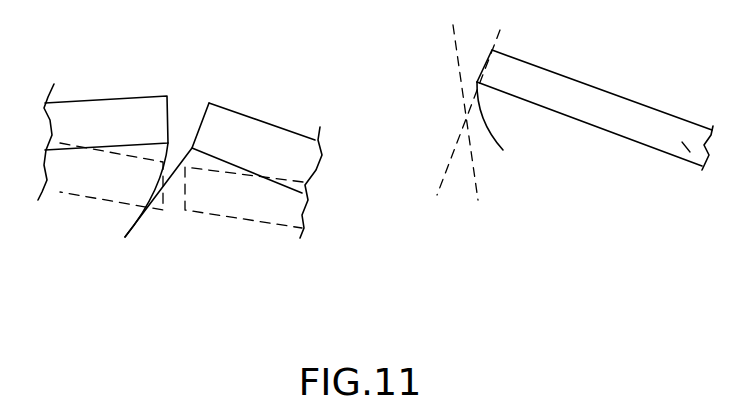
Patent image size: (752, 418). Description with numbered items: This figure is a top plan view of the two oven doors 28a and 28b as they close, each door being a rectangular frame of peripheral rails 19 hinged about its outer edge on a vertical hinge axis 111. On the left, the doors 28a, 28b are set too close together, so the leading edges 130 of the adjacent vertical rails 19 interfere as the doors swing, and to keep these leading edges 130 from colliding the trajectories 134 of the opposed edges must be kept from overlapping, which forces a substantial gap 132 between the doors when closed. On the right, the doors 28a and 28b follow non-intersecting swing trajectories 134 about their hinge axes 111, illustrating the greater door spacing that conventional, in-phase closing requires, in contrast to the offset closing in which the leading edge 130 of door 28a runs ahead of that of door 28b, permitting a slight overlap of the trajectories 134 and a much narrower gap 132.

The door 28a is at (252, 133).
The door 28b is at (113, 117).
The peripheral rails 19 is at (182, 77).
The leading edge 130 is at (327, 179).
The gap 132 is at (171, 210).
The trajectory 134 is at (470, 158).
The hinge axis 111 is at (682, 142).